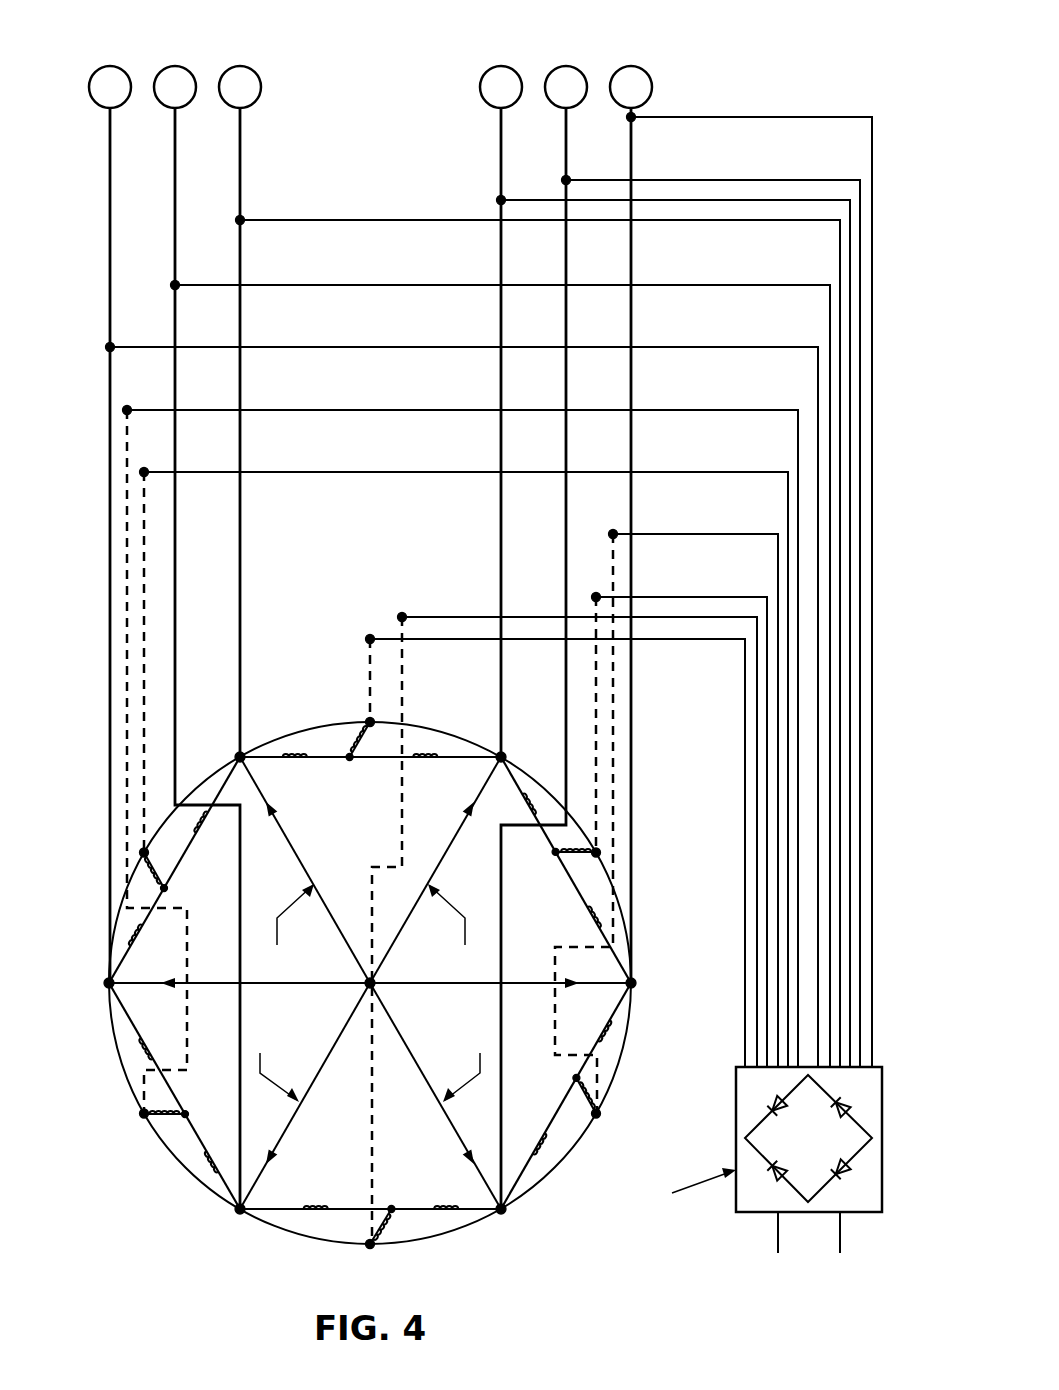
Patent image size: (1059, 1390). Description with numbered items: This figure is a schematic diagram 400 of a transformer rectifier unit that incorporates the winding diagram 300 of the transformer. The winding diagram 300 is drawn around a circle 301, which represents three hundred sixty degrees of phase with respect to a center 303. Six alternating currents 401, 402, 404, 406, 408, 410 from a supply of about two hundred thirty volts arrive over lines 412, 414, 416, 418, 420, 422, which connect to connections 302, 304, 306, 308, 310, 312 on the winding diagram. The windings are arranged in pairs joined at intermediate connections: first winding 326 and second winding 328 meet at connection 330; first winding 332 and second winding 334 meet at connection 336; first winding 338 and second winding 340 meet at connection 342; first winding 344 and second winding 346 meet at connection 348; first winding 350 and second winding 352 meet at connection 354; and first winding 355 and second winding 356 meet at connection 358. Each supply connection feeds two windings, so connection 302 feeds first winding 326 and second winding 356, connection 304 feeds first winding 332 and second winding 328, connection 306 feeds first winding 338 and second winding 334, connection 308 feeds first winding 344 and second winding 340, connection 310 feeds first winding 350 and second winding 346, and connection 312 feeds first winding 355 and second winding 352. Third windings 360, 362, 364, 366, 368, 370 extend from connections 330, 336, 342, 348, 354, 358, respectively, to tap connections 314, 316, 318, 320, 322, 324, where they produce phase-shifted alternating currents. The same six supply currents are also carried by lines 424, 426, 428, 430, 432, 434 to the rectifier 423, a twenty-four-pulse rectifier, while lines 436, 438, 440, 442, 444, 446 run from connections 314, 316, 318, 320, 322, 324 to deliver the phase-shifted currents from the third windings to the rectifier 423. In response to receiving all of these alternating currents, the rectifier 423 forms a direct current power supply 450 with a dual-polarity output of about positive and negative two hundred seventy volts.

The winding diagram 300 is at (230, 656).
The circle 301 is at (128, 1060).
The connection 302 is at (244, 742).
The center 303 is at (370, 983).
The connection 304 is at (502, 750).
The connection 306 is at (637, 992).
The connection 308 is at (503, 1218).
The connection 310 is at (245, 1218).
The connection 312 is at (104, 992).
The connection 314 is at (350, 740).
The connection 316 is at (606, 862).
The connection 318 is at (602, 1118).
The connection 320 is at (362, 1248).
The connection 322 is at (140, 1118).
The connection 324 is at (136, 859).
The first winding 326 is at (300, 764).
The second winding 328 is at (425, 750).
The connection 330 is at (350, 761).
The first winding 332 is at (480, 776).
The second winding 334 is at (628, 958).
The connection 336 is at (548, 860).
The first winding 338 is at (615, 1036).
The second winding 340 is at (520, 1192).
The connection 342 is at (574, 1079).
The first winding 344 is at (468, 1212).
The second winding 346 is at (343, 1206).
The connection 348 is at (392, 1206).
The first winding 350 is at (226, 1180).
The second winding 352 is at (140, 1034).
The connection 354 is at (188, 1112).
The first winding 355 is at (120, 954).
The second winding 356 is at (278, 795).
The connection 358 is at (168, 888).
The third winding 360 is at (366, 721).
The third winding 362 is at (553, 852).
The third winding 364 is at (584, 1076).
The third winding 366 is at (388, 1232).
The third winding 368 is at (162, 1124).
The third winding 370 is at (167, 898).
The schematic diagram 400 is at (708, 52).
The alternating current 401 is at (256, 66).
The alternating current 402 is at (480, 86).
The alternating current 404 is at (631, 66).
The alternating current 406 is at (566, 66).
The alternating current 408 is at (191, 66).
The alternating current 410 is at (126, 66).
The line 412 is at (241, 560).
The line 414 is at (565, 560).
The line 416 is at (633, 448).
The line 418 is at (500, 525).
The line 420 is at (176, 545).
The line 422 is at (109, 564).
The rectifier 423 is at (734, 1111).
The line 424 is at (373, 219).
The line 426 is at (519, 198).
The line 428 is at (753, 116).
The line 430 is at (745, 178).
The line 432 is at (373, 283).
The line 434 is at (373, 345).
The line 436 is at (368, 632).
The line 438 is at (690, 595).
The line 440 is at (690, 533).
The line 442 is at (470, 616).
The line 444 is at (373, 407).
The line 446 is at (373, 470).
The direct current power supply 450 is at (824, 1234).